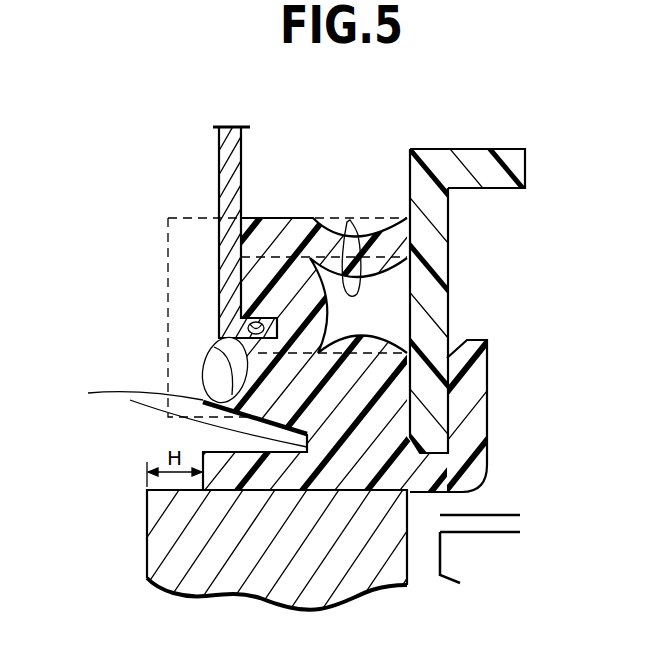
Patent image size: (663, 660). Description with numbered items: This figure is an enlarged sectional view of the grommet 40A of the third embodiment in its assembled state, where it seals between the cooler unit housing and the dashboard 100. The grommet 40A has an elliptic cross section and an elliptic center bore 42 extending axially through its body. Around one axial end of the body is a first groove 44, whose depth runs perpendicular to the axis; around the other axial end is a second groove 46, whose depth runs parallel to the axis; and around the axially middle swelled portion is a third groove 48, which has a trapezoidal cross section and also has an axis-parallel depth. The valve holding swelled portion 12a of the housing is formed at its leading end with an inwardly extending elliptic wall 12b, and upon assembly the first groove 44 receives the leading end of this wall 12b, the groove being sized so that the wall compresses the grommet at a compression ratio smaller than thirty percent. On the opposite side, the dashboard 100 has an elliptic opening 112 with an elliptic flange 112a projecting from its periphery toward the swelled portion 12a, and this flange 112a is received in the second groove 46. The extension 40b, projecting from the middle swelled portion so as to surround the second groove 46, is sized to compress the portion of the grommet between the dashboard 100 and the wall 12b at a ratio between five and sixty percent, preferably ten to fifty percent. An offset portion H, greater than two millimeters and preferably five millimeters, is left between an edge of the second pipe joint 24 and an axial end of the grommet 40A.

The valve holding swelled portion 12a is at (520, 148).
The inwardly extending elliptic wall 12b is at (448, 312).
The second pipe joint 24 is at (147, 520).
The grommet 40A is at (368, 181).
The extension 40b is at (168, 262).
The elliptic center bore 42 is at (350, 492).
The first groove 44 is at (430, 452).
The second groove 46 is at (270, 320).
The third groove 48 is at (347, 222).
The dashboard 100 is at (220, 162).
The opening 112 is at (210, 390).
The elliptic flange 112a is at (160, 392).